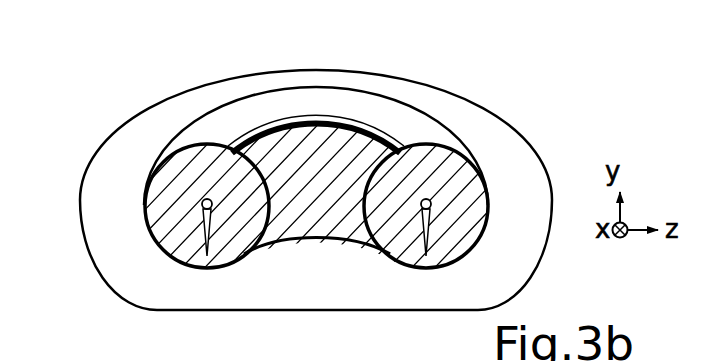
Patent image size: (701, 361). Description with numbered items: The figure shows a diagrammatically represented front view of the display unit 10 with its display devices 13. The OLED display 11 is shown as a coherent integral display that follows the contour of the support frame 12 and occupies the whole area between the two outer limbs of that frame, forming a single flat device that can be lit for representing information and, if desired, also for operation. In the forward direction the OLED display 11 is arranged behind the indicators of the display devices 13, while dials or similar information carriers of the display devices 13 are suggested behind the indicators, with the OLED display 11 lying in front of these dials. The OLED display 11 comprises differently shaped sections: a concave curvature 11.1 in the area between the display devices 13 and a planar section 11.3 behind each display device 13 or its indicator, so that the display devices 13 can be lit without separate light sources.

The display unit 10 is at (366, 56).
The OLED display 11 is at (303, 167).
The concave curvature 11.1 is at (324, 234).
The planar section 11.3 is at (173, 170).
The support frame 12 is at (447, 97).
The display devices 13 is at (210, 198).